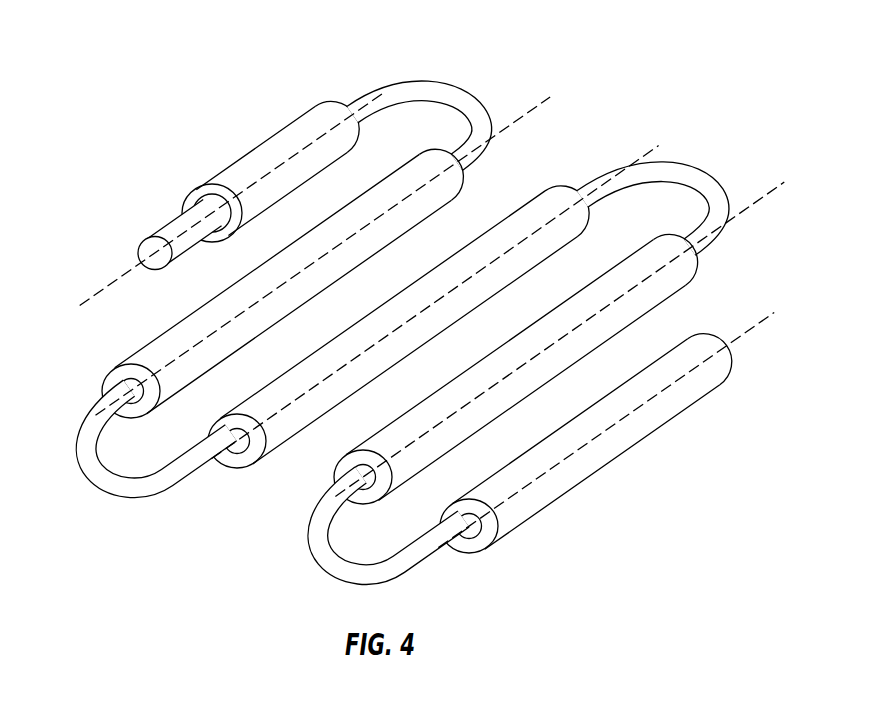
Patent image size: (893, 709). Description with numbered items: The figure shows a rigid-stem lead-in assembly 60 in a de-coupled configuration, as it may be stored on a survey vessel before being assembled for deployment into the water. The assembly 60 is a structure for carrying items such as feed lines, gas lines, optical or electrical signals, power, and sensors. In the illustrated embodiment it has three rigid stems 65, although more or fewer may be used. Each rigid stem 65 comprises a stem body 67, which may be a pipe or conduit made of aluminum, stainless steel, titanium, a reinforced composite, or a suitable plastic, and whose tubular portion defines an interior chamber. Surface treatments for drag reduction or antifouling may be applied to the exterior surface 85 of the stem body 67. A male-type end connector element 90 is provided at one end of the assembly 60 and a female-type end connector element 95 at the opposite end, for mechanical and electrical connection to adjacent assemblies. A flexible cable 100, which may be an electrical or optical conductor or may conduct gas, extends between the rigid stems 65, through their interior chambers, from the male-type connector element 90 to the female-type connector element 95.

The rigid-stem lead-in assembly 60 is at (427, 338).
The rigid stem 65 is at (122, 354).
The stem body 67 is at (243, 279).
The exterior surface 85 is at (450, 202).
The male-type end connector element 90 is at (255, 143).
The female-type end connector element 95 is at (608, 462).
The flexible cable 100 is at (634, 158).